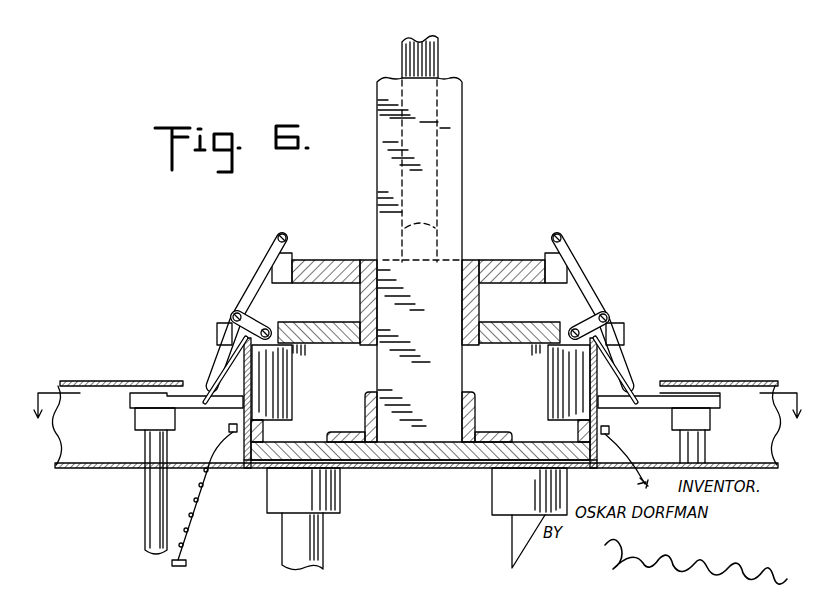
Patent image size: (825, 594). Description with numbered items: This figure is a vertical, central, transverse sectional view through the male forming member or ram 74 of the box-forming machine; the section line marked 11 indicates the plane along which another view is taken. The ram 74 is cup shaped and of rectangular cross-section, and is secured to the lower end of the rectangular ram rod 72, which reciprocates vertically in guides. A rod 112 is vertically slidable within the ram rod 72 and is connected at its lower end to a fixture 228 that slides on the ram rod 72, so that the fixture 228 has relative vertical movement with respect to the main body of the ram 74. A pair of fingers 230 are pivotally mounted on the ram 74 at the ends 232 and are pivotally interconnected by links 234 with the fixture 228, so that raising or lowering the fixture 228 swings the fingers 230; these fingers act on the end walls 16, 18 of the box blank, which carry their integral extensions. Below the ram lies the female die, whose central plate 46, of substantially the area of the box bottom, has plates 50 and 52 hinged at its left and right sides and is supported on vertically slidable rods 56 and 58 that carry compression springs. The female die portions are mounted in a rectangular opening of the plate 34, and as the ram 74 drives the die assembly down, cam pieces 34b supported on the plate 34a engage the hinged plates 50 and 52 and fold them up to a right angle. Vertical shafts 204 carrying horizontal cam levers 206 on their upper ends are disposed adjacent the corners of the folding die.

The rod 112 is at (430, 50).
The ram rod 72 is at (456, 103).
The fixture 228 is at (481, 262).
The ends of the ram 232 is at (268, 325).
The links 234 is at (260, 282).
The fingers 230 is at (212, 342).
The end wall 16 is at (250, 383).
The end wall 18 is at (563, 386).
The male forming ram 74 is at (506, 440).
The central plate 46 is at (412, 470).
The plate 34a is at (78, 468).
The plate 34 is at (130, 381).
The horizontal cam levers 206 is at (186, 385).
The vertical shafts 204 is at (145, 542).
The cam pieces 34b is at (225, 436).
The plate 50 is at (230, 470).
The plate 52 is at (601, 470).
The rods 56 is at (318, 538).
The rods 58 is at (512, 528).
The section line 11 is at (416, 425).